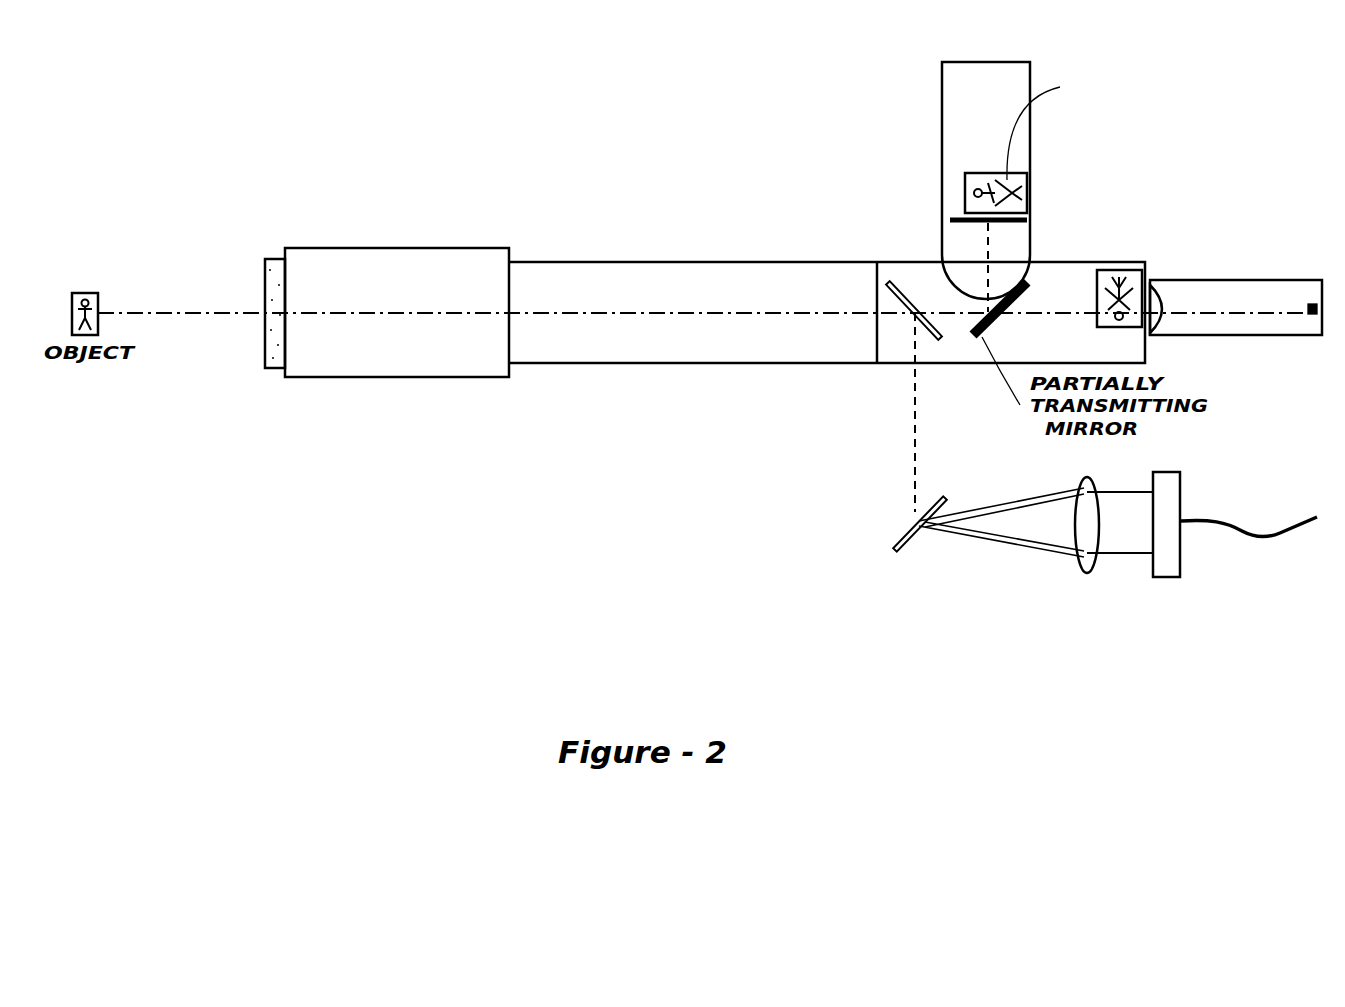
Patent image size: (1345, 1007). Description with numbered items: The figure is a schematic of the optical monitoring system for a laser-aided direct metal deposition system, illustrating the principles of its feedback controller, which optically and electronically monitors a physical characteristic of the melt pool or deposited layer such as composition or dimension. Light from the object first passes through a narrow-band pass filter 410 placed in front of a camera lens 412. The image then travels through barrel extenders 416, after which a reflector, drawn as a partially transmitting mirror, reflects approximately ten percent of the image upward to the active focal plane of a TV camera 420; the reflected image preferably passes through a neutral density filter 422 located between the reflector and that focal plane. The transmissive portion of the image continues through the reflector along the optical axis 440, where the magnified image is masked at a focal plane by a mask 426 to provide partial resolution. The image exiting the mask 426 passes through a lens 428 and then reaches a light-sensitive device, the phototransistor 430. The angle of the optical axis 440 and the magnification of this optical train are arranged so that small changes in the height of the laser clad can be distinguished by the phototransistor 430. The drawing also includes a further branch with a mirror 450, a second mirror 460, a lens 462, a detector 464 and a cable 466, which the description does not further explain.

The narrow-band pass filter 410 is at (277, 368).
The camera lens 412 is at (422, 365).
The barrel extenders 416 is at (578, 363).
The TV camera 420 is at (962, 97).
The neutral density filter 422 is at (950, 217).
The mask 426 is at (1148, 340).
The lens 428 is at (1185, 262).
The phototransistor 430 is at (1313, 305).
The optical axis 440 is at (692, 313).
The beam splitter mirror 450 is at (880, 291).
The mirror 460 is at (907, 532).
The lens 462 is at (1080, 570).
The detector 464 is at (1168, 572).
The signal cable 466 is at (1275, 538).